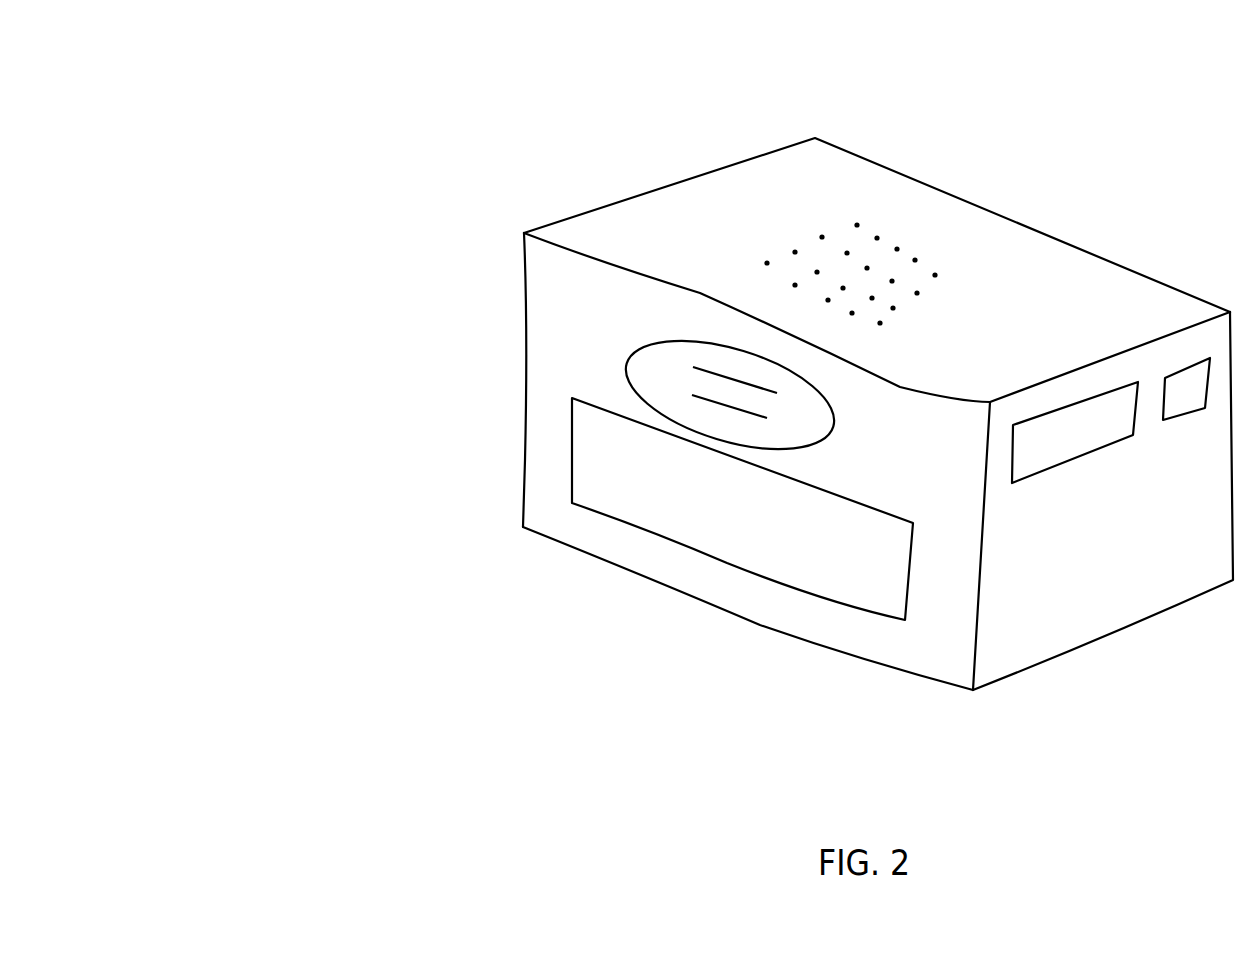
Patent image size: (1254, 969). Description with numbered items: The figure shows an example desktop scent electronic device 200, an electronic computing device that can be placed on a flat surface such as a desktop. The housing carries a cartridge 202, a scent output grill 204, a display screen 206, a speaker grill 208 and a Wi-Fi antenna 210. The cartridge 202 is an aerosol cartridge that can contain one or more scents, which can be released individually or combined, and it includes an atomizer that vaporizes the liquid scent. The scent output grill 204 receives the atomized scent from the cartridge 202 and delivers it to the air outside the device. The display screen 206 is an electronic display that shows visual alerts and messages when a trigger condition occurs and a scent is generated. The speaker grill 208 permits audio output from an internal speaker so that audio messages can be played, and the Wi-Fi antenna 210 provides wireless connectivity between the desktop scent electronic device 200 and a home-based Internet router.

The desktop scent electronic device 200 is at (277, 59).
The cartridge 202 is at (1080, 467).
The scent output grill 204 is at (590, 340).
The display screen 206 is at (548, 447).
The speaker grill 208 is at (745, 218).
The Wi-Fi antenna 210 is at (1190, 430).